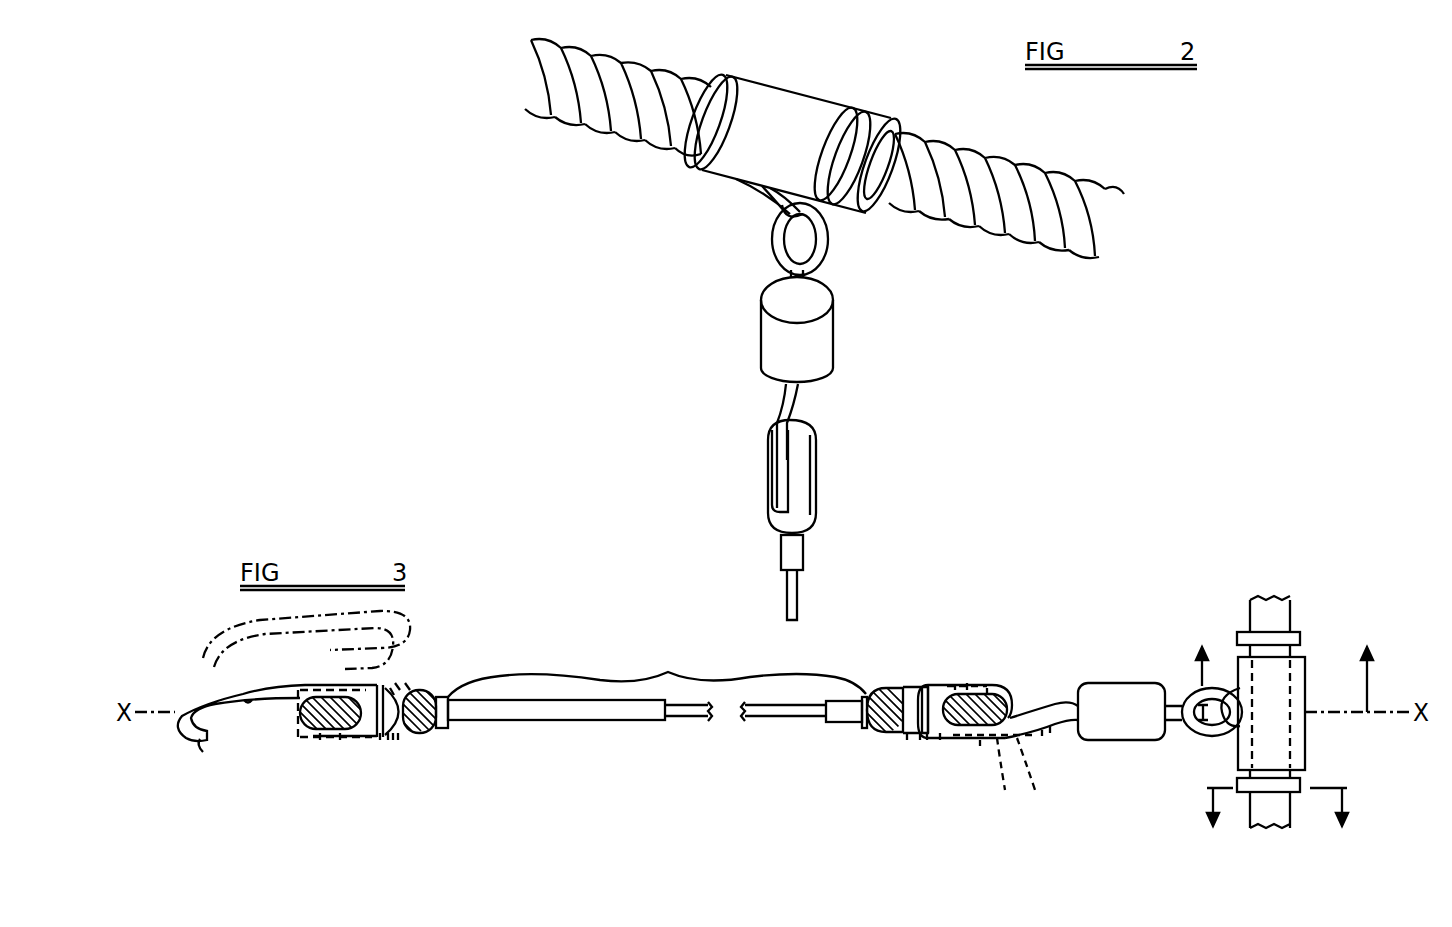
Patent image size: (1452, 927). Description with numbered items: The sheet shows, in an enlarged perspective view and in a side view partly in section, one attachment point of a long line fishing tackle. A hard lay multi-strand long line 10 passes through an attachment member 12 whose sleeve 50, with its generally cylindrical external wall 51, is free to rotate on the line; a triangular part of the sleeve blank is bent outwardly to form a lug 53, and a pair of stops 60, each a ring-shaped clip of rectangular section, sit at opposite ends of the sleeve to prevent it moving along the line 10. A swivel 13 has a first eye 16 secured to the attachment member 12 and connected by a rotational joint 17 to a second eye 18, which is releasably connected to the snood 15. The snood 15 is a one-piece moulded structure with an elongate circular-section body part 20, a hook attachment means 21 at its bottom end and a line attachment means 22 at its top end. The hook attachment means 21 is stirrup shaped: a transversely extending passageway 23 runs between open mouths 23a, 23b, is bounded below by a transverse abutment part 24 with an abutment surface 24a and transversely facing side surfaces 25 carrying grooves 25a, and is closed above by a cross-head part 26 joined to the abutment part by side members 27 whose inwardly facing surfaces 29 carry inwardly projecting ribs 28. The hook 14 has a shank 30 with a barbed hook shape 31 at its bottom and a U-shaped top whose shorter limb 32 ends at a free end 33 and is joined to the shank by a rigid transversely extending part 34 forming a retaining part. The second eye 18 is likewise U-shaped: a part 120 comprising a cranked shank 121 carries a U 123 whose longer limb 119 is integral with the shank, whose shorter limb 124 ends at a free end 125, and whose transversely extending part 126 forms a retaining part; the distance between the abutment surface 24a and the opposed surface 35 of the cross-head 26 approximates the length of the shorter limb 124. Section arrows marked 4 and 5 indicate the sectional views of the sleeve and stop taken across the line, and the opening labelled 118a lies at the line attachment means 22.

In FIG. 2, the long line 10 is at (1012, 163).
In FIG. 2, the attachment member 12 is at (792, 127).
In FIG. 3, the attachment member 12 is at (1304, 712).
In FIG. 2, the swivel 13 is at (787, 326).
In FIG. 3, the swivel 13 is at (1130, 733).
In FIG. 3, the hook 14 is at (202, 696).
In FIG. 2, the snood 15 is at (788, 564).
In FIG. 3, the snood 15 is at (702, 731).
In FIG. 2, the first eye 16 is at (823, 255).
In FIG. 3, the first eye 16 is at (1200, 733).
In FIG. 2, the rotational joint 17 is at (830, 362).
In FIG. 3, the rotational joint 17 is at (1120, 685).
In FIG. 2, the second eye 18 is at (773, 416).
In FIG. 3, the second eye 18 is at (600, 722).
In FIG. 2, the body part 20 is at (808, 545).
In FIG. 3, the body part 20 is at (657, 687).
In FIG. 3, the hook attachment means 21 is at (438, 689).
In FIG. 2, the line attachment means 22 is at (818, 513).
In FIG. 3, the line attachment means 22 is at (875, 689).
In FIG. 3, the passageway 23 is at (412, 680).
In FIG. 3, the open mouth 23a is at (407, 683).
In FIG. 3, the open mouth 23b is at (400, 737).
In FIG. 3, the transverse abutment part 24 is at (288, 703).
In FIG. 3, the abutment surface 24a is at (380, 737).
In FIG. 3, the side surface 25 is at (303, 690).
In FIG. 3, the groove 25a is at (317, 690).
In FIG. 3, the cross-head part 26 is at (372, 690).
In FIG. 3, the side member 27 is at (395, 737).
In FIG. 3, the rib 28 is at (388, 737).
In FIG. 3, the inwardly facing surface 29 is at (392, 690).
In FIG. 3, the shank 30 is at (250, 702).
In FIG. 3, the barbed hook shape 31 is at (203, 741).
In FIG. 3, the shorter limb 32 is at (340, 740).
In FIG. 3, the free end 33 is at (320, 738).
In FIG. 3, the transversely extending part 34 is at (397, 683).
In FIG. 3, the opposed surface 35 is at (403, 737).
In FIG. 2, the sleeve 50 is at (803, 98).
In FIG. 3, the sleeve 50 is at (1303, 733).
In FIG. 2, the external wall 51 is at (766, 120).
In FIG. 3, the lug 53 is at (1227, 747).
In FIG. 3, the stop 60 is at (1302, 638).
In FIG. 3, the opening 118a is at (965, 685).
In FIG. 3, the longer limb 119 is at (980, 744).
In FIG. 3, the part 120 is at (1050, 728).
In FIG. 3, the shank 121 is at (1042, 733).
In FIG. 3, the U 123 is at (928, 736).
In FIG. 3, the shorter limb 124 is at (957, 685).
In FIG. 3, the free end 125 is at (987, 688).
In FIG. 3, the transversely extending part 126 is at (920, 733).
In FIG. 3, the section line 4 is at (1284, 668).
In FIG. 3, the section line 5 is at (1277, 822).